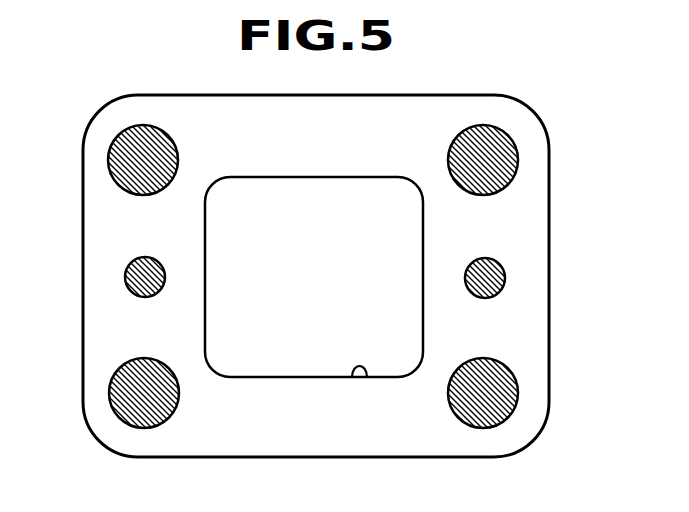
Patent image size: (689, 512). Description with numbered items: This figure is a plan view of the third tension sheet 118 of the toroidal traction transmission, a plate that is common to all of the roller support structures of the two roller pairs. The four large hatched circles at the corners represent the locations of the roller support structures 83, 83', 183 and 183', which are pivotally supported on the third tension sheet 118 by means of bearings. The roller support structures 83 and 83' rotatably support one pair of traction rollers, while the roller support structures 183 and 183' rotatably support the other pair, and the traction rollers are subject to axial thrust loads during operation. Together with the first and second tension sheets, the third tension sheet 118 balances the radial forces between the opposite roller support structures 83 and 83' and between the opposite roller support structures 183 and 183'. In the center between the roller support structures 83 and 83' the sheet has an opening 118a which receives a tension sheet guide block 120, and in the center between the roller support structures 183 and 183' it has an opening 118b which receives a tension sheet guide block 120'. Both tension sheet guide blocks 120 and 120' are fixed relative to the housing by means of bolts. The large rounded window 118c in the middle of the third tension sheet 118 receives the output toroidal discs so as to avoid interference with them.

The third tension sheet 118 is at (84, 350).
The opening 118a is at (164, 271).
The opening 118b is at (466, 281).
The window 118c is at (366, 374).
The roller support structure 83 is at (104, 160).
The roller support structure 83' is at (98, 393).
The roller support structure 183 is at (537, 160).
The roller support structure 183' is at (541, 393).
The tension sheet guide block 120 is at (91, 277).
The tension sheet guide block 120' is at (544, 265).